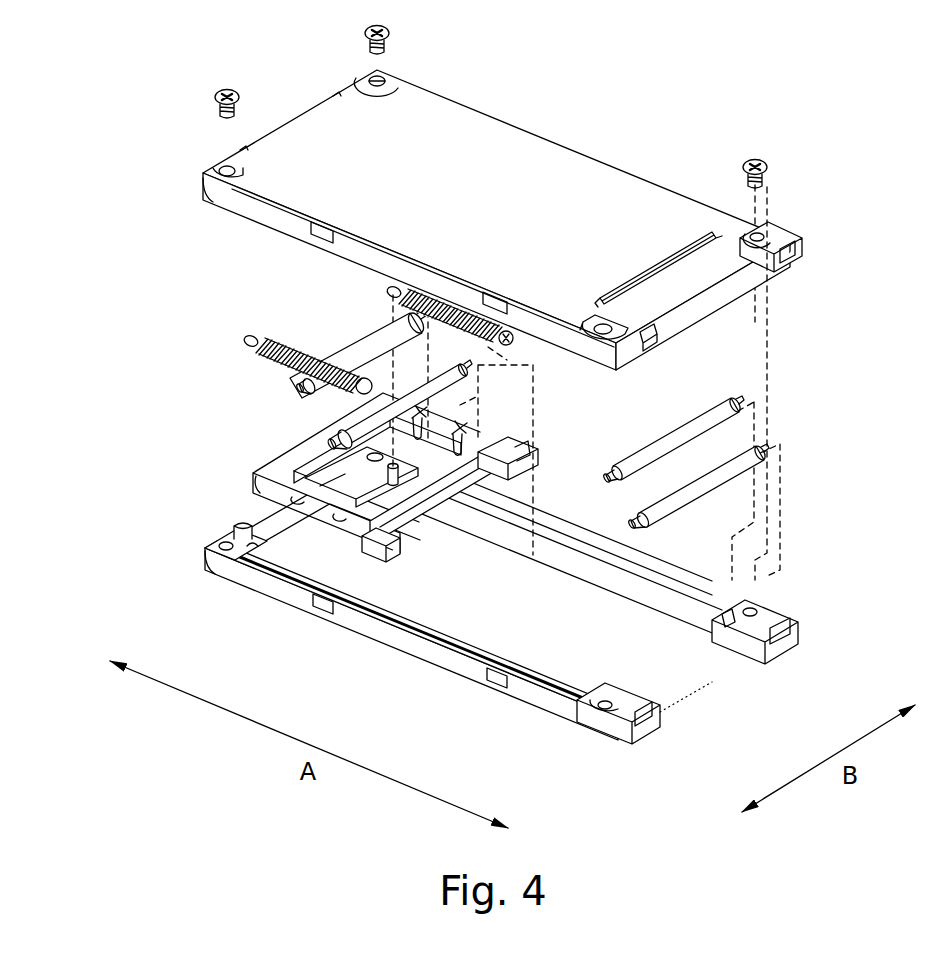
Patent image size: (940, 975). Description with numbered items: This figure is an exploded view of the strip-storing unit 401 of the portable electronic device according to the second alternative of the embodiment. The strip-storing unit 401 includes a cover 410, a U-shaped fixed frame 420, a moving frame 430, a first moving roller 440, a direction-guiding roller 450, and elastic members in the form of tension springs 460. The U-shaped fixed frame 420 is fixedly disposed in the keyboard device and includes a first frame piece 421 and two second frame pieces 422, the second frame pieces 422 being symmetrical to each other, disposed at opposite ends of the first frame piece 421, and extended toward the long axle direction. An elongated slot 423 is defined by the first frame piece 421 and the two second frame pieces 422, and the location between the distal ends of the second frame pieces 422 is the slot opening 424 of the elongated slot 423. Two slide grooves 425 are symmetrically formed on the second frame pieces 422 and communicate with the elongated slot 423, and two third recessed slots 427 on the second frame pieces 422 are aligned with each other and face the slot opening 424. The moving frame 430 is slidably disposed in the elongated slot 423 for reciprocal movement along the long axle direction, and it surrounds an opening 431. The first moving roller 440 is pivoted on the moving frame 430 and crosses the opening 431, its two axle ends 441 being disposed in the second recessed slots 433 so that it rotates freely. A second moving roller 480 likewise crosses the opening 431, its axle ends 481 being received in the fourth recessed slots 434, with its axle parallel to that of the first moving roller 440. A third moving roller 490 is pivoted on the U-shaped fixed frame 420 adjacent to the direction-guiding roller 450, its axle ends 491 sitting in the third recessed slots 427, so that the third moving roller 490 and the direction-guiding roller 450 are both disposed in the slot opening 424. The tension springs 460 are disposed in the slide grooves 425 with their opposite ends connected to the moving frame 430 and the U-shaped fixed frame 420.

The strip-storing unit 401 is at (822, 63).
The cover 410 is at (535, 152).
The U-shaped fixed frame 420 is at (125, 568).
The first frame piece 421 is at (240, 524).
The second frame pieces 422 is at (568, 520).
The elongated slot 423 is at (490, 628).
The slot opening 424 is at (695, 672).
The slide grooves 425 is at (693, 595).
The third recessed slots 427 is at (612, 690).
The moving frame 430 is at (253, 470).
The opening 431 is at (413, 513).
The second recessed slots 433 is at (455, 403).
The fourth recessed slots 434 is at (470, 436).
The first moving roller 440 is at (333, 350).
The axle end 441 is at (303, 384).
The direction-guiding roller 450 is at (735, 450).
The tension springs 460 is at (265, 357).
The second moving roller 480 is at (413, 388).
The axle end 481 is at (338, 441).
The third moving roller 490 is at (682, 425).
The axle end 491 is at (610, 470).